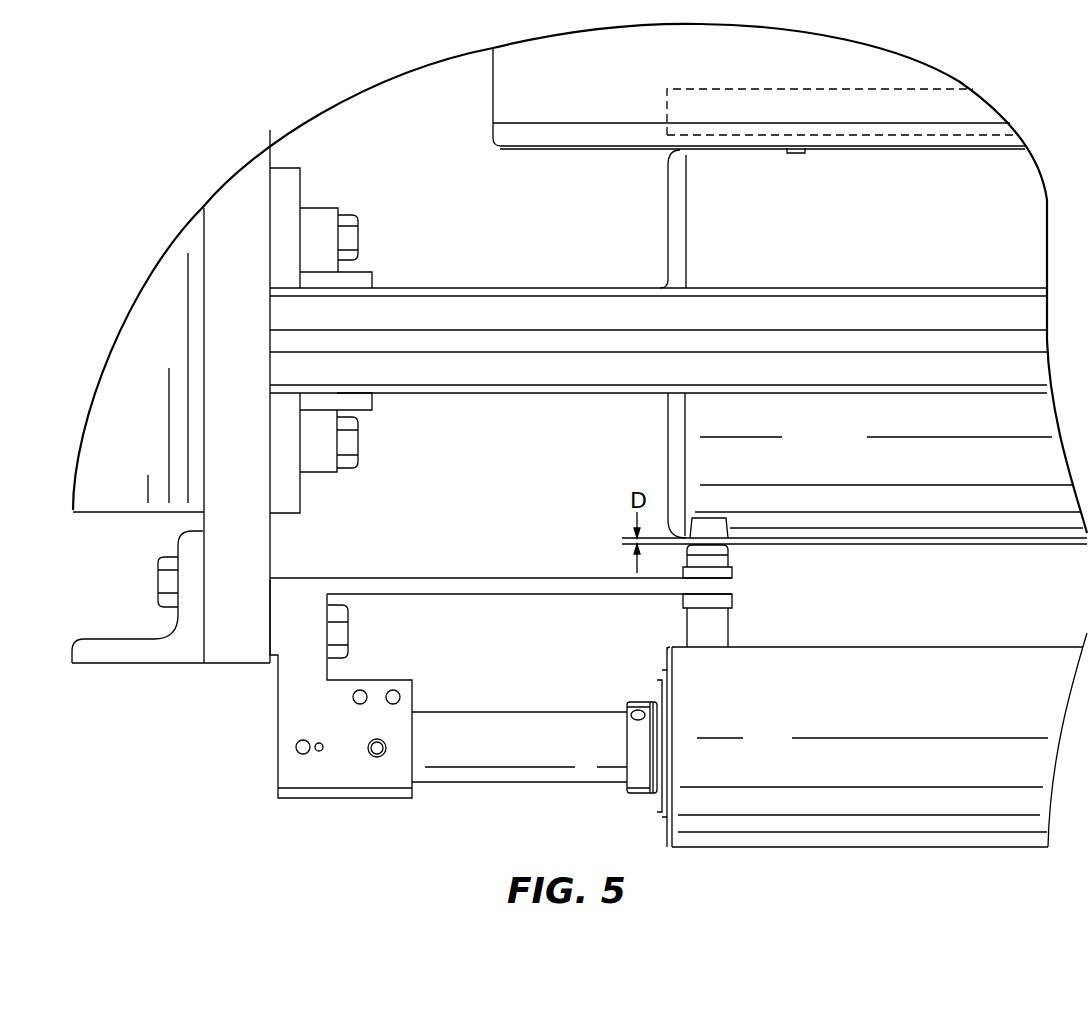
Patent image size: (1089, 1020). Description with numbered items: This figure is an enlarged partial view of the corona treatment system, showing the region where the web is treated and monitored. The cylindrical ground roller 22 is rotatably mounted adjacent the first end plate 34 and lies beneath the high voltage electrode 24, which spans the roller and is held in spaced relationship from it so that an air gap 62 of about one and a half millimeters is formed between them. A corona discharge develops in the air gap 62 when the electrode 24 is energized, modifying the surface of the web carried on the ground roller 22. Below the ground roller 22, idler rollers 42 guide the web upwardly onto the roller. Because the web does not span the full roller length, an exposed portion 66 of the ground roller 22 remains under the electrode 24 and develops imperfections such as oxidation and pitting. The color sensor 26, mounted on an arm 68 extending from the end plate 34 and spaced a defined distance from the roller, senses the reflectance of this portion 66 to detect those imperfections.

The ground roller 22 is at (955, 520).
The high voltage electrode 24 is at (697, 88).
The color sensor 26 is at (717, 627).
The first end plate 34 is at (253, 545).
The idler rollers 42 is at (877, 825).
The air gap 62 is at (732, 545).
The exposed portion 66 is at (708, 517).
The arm 68 is at (506, 572).